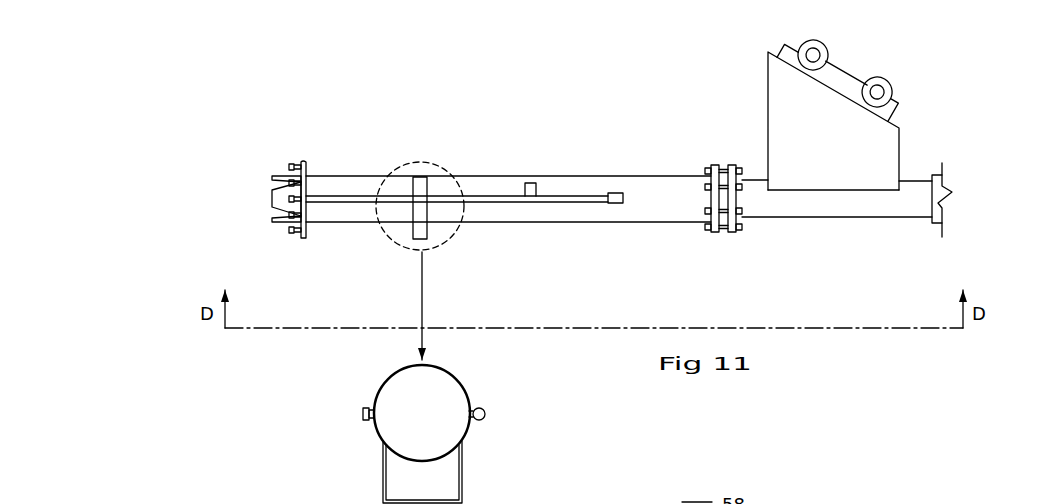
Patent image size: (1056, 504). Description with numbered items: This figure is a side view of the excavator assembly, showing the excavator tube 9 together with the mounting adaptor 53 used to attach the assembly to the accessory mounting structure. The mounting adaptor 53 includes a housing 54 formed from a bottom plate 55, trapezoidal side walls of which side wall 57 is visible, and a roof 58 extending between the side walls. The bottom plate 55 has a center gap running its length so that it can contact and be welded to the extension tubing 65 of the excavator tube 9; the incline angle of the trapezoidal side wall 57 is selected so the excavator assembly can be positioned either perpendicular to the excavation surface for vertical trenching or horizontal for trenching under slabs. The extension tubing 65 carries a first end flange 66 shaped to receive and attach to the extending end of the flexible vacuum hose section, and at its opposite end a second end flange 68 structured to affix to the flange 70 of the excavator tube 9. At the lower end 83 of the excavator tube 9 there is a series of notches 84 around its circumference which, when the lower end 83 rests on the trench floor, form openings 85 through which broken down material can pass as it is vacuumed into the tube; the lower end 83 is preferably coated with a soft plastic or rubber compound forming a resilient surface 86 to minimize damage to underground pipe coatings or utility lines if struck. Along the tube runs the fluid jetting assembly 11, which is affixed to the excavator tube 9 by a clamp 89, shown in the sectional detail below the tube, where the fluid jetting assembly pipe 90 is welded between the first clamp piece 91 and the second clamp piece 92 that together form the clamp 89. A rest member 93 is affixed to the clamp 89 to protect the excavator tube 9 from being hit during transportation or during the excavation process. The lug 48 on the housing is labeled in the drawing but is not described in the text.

The excavator tube 9 is at (343, 175).
The fluid jetting assembly 11 is at (584, 205).
The mounting lug 48 is at (825, 65).
The mounting adaptor 53 is at (870, 105).
The housing 54 is at (879, 97).
The bottom plate 55 is at (790, 191).
The side wall 57 is at (878, 149).
The roof 58 is at (795, 40).
The extension tubing 65 is at (752, 218).
The first end flange 66 is at (932, 175).
The second end flange 68 is at (732, 165).
The flange 70 is at (716, 165).
The lower end 83 is at (241, 200).
The notches 84 is at (282, 183).
The openings 85 is at (273, 213).
The resilient surface 86 is at (279, 223).
The clamp 89 is at (434, 395).
The fluid jetting assembly pipe 90 is at (488, 412).
The first clamp piece 91 is at (386, 385).
The second clamp piece 92 is at (466, 433).
The rest member 93 is at (383, 480).